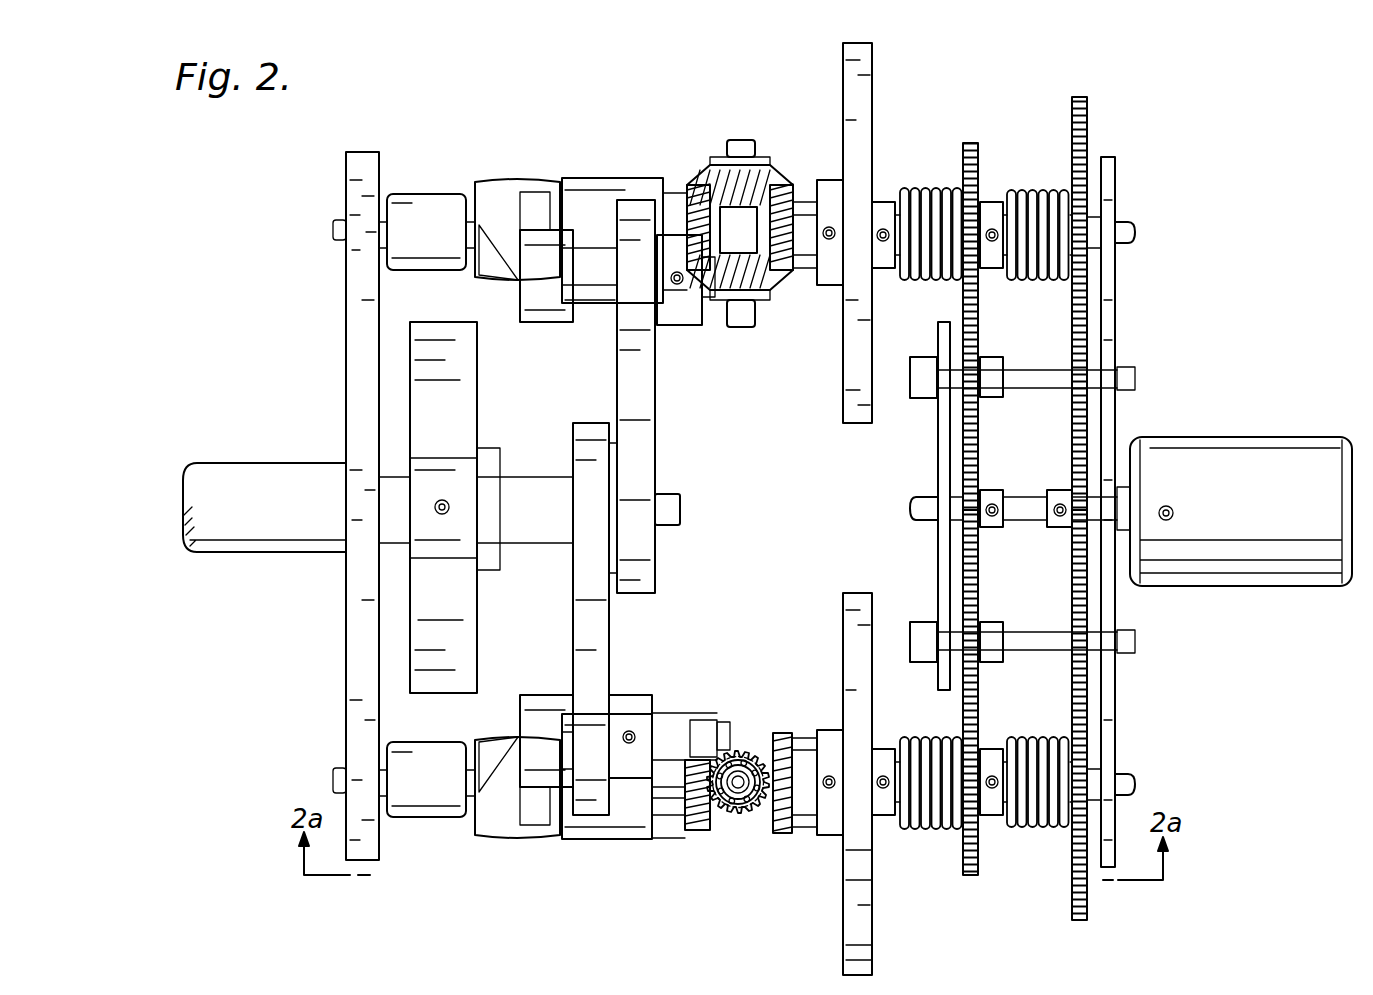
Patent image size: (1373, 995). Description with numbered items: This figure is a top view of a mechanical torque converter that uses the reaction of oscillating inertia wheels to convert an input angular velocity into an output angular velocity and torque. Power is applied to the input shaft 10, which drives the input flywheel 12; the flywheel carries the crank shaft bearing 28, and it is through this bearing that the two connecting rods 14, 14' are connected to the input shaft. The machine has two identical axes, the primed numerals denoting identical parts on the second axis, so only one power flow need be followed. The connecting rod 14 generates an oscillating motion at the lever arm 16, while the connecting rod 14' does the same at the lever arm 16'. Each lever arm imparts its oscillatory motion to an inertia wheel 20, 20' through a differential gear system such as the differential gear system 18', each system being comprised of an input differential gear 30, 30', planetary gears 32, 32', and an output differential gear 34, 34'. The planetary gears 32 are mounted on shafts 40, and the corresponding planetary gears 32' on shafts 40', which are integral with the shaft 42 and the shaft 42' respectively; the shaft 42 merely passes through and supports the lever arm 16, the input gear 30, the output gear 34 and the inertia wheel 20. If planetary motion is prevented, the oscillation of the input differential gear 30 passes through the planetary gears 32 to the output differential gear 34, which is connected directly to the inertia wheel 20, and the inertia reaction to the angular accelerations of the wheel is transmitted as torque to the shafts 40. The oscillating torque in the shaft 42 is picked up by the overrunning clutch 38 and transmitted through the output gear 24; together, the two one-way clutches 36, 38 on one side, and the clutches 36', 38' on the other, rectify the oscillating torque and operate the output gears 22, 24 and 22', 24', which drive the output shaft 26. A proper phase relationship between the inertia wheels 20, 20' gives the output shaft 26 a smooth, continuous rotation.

The input shaft 10 is at (248, 463).
The input flywheel 12 is at (478, 422).
The connecting rod 14 is at (621, 619).
The connecting rod 14' is at (605, 396).
The lever arm 16 is at (577, 784).
The lever arm 16' is at (581, 267).
The differential gear system 18' is at (732, 193).
The inertia wheel 20 is at (820, 784).
The inertia wheel 20' is at (888, 233).
The output gear 22 is at (953, 713).
The output gear 22' is at (953, 305).
The output gear 24 is at (1055, 726).
The output gear 24' is at (1106, 284).
The output shaft 26 is at (1245, 437).
The crank shaft bearing 28 is at (680, 497).
The input differential gear 30 is at (682, 816).
The input differential gear 30' is at (666, 200).
The planetary gears 32 is at (738, 822).
The planetary gears 32' is at (768, 311).
The output differential gear 34 is at (798, 759).
The output differential gear 34' is at (800, 200).
The overrunning clutch 36 is at (923, 805).
The overrunning clutch 36' is at (922, 252).
The overrunning clutch 38 is at (1032, 805).
The overrunning clutch 38' is at (1032, 253).
The shaft 40 is at (742, 737).
The shaft 40' is at (732, 251).
The shaft 42 is at (1157, 773).
The shaft 42' is at (1165, 220).